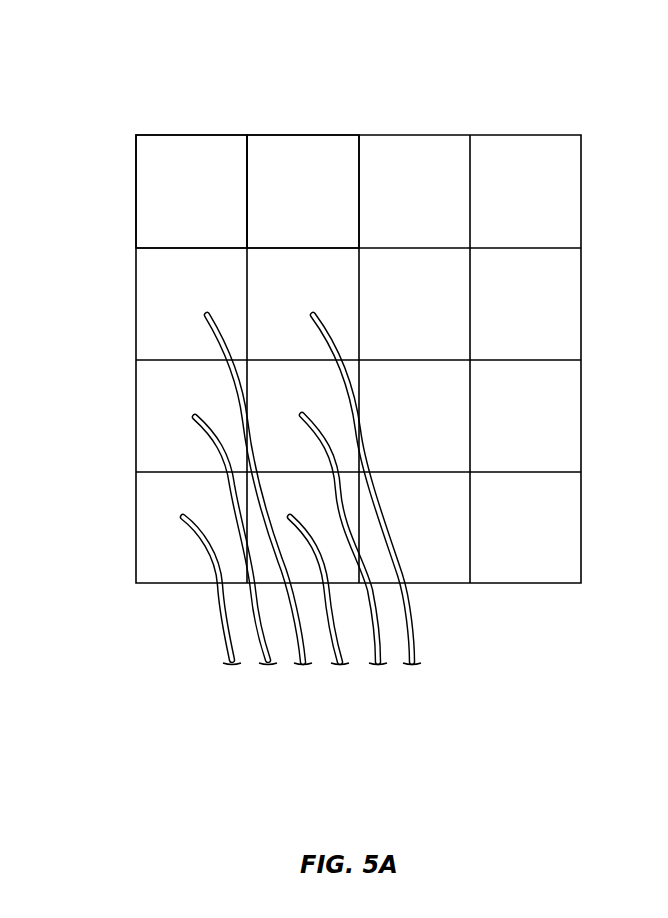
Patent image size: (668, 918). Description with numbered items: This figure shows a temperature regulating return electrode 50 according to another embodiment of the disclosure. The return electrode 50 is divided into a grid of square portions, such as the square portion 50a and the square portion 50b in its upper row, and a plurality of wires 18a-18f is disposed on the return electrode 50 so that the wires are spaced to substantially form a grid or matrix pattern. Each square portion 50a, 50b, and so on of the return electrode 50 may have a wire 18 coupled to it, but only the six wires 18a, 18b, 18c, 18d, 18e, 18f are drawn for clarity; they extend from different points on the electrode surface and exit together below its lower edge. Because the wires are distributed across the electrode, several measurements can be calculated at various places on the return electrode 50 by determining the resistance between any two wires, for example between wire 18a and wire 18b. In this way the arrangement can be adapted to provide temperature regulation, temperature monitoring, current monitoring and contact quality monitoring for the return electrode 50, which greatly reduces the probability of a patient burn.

The return electrode 50 is at (584, 71).
The square portion 50a is at (211, 205).
The square portion 50b is at (321, 205).
The wire 18 is at (314, 531).
The wire 18a is at (219, 626).
The wire 18b is at (270, 650).
The wire 18c is at (243, 405).
The wire 18d is at (333, 627).
The wire 18e is at (372, 595).
The wire 18f is at (399, 568).